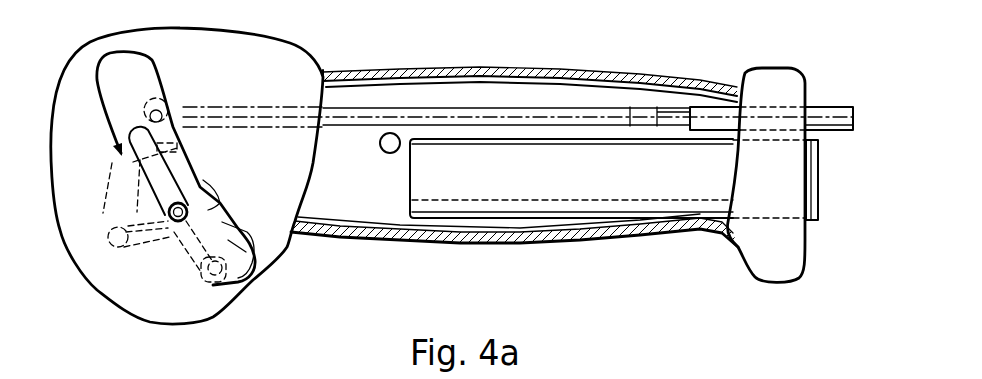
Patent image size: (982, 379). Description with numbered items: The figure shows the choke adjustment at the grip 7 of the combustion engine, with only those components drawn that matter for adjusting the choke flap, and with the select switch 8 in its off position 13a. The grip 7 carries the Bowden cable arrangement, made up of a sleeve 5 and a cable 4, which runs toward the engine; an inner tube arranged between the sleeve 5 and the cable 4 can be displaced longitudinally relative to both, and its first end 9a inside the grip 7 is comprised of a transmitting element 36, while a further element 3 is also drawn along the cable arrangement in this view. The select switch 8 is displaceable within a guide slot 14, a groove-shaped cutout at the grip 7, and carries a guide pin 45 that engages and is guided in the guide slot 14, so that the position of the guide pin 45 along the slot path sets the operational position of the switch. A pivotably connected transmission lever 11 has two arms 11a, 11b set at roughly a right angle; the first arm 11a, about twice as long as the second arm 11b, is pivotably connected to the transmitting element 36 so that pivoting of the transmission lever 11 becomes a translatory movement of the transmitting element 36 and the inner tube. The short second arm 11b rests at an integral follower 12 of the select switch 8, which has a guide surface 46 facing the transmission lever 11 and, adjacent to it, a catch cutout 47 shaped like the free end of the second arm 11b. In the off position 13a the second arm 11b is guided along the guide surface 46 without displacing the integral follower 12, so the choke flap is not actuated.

The coupling 3 is at (613, 108).
The cable 4 is at (567, 113).
The sleeve 5 is at (830, 103).
The grip 7 is at (509, 65).
The select switch 8 is at (222, 193).
The first end of the inner tube 9a is at (178, 103).
The transmission lever 11 is at (119, 250).
The first arm 11a is at (110, 198).
The second arm 11b is at (154, 238).
The integral follower 12 is at (217, 286).
The off position 13a is at (211, 219).
The guide slot 14 is at (159, 172).
The transmitting element 36 is at (212, 106).
The guide pin 45 is at (237, 250).
The guide surface 46 is at (198, 262).
The catch cutout 47 is at (205, 283).